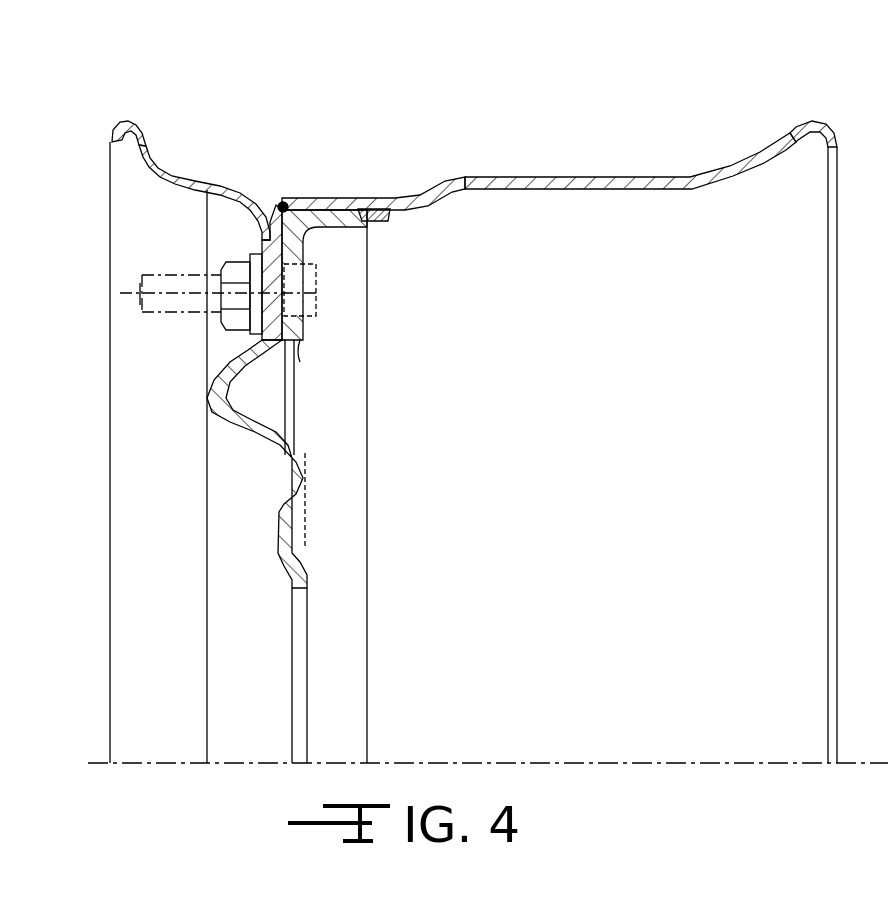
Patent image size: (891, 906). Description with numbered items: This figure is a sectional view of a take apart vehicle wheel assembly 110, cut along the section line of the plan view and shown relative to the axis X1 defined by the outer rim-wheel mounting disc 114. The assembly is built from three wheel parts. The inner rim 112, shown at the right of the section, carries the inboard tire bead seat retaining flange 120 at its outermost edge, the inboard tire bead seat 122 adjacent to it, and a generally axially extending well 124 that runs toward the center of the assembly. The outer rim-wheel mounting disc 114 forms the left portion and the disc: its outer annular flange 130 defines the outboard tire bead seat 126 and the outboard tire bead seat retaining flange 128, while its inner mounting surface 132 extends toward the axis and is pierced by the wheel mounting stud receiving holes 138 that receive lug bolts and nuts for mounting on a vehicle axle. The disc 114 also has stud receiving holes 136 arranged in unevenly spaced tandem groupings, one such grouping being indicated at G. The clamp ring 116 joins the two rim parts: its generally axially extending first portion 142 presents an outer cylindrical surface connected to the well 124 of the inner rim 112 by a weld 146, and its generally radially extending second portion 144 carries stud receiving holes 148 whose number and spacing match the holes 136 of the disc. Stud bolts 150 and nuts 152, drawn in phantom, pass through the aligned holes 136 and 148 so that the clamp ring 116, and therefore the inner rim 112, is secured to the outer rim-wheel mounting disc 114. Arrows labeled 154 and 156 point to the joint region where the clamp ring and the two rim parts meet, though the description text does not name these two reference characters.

The take apart vehicle wheel assembly 110 is at (141, 68).
The inner rim 112 is at (692, 207).
The outer rim-wheel mounting disc 114 is at (228, 433).
The clamp ring 116 is at (314, 240).
The inboard tire bead seat retaining flange 120 is at (826, 122).
The inboard tire bead seat 122 is at (763, 158).
The well 124 is at (410, 197).
The outboard tire bead seat 126 is at (198, 172).
The outboard tire bead seat retaining flange 128 is at (120, 124).
The outer annular flange 130 is at (170, 181).
The inner mounting surface 132 is at (306, 485).
The stud receiving holes 136 is at (252, 292).
The wheel mounting stud receiving holes 138 is at (290, 532).
The first portion 142 is at (350, 222).
The second portion 144 is at (300, 360).
The weld 146 is at (392, 208).
The stud receiving holes 148 is at (303, 300).
The stud bolts 150 is at (160, 286).
The nuts 152 is at (233, 262).
The joint 154 is at (279, 196).
The joint 156 is at (288, 212).
The tandem grouping G is at (244, 338).
The axis X1 is at (503, 762).